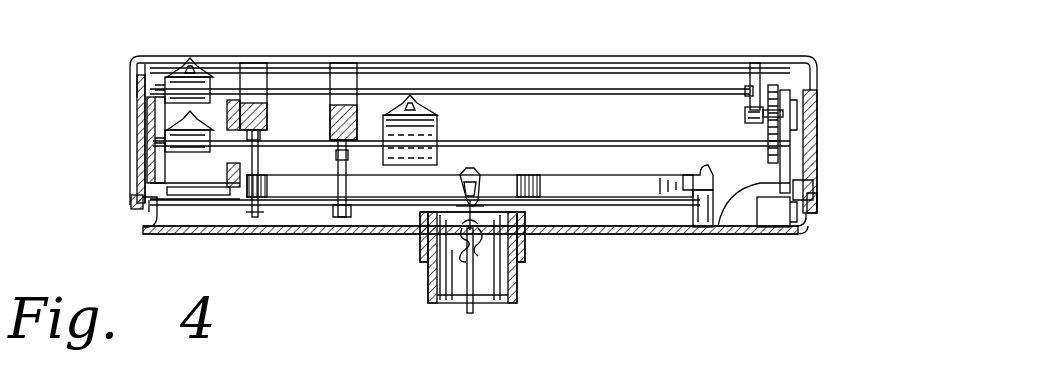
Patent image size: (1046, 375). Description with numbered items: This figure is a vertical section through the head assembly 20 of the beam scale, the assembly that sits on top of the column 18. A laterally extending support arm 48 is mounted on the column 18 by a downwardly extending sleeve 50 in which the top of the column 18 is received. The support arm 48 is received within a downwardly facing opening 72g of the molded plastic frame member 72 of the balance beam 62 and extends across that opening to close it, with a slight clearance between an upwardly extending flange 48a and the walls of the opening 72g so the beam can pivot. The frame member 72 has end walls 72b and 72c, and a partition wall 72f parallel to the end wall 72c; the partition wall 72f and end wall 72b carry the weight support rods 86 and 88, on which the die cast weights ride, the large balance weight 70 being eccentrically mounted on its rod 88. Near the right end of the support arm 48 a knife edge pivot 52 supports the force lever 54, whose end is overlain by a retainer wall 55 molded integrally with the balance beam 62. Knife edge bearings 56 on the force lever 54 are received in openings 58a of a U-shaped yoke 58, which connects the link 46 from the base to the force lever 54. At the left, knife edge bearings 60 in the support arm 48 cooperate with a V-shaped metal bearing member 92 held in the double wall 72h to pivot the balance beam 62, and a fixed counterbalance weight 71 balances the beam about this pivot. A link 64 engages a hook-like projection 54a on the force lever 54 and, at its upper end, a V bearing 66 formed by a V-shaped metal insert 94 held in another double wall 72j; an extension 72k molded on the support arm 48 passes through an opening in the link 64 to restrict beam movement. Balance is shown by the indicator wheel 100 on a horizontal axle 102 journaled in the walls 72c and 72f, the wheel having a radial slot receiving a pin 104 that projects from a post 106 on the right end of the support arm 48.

The head assembly 20 is at (763, 27).
The column 18 is at (515, 283).
The link 46 is at (465, 290).
The support arm 48 is at (760, 237).
The upwardly extending flange 48a is at (803, 227).
The sleeve 50 is at (420, 245).
The knife edge pivot 52 is at (693, 197).
The force lever 54 is at (618, 175).
The hook-like projection 54a is at (190, 200).
The retainer wall 55 is at (700, 165).
The knife edge bearings 56 is at (470, 175).
The U-shaped yoke 58 is at (483, 203).
The openings 58a is at (485, 235).
The knife edge bearings 60 is at (348, 205).
The balance beam 62 is at (813, 183).
The link 64 is at (262, 170).
The V bearing 66 is at (263, 128).
The large balance weight 70 is at (445, 115).
The fixed counterbalance weight 71 is at (153, 230).
The frame member 72 is at (135, 93).
The end wall 72b is at (133, 127).
The end wall 72c is at (817, 203).
The partition wall 72f is at (745, 115).
The downwardly facing opening 72g is at (133, 197).
The double wall 72h is at (327, 110).
The double wall 72j is at (237, 110).
The extension 72k is at (233, 195).
The weight support rod 86 is at (490, 90).
The weight support rod 88 is at (577, 140).
The V-shaped metal bearing member 92 is at (333, 137).
The V-shaped metal insert 94 is at (260, 100).
The indicator wheel 100 is at (768, 85).
The axle 102 is at (780, 133).
The pin 104 is at (757, 63).
The post 106 is at (728, 232).